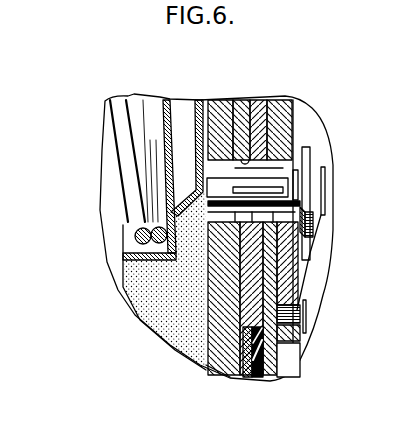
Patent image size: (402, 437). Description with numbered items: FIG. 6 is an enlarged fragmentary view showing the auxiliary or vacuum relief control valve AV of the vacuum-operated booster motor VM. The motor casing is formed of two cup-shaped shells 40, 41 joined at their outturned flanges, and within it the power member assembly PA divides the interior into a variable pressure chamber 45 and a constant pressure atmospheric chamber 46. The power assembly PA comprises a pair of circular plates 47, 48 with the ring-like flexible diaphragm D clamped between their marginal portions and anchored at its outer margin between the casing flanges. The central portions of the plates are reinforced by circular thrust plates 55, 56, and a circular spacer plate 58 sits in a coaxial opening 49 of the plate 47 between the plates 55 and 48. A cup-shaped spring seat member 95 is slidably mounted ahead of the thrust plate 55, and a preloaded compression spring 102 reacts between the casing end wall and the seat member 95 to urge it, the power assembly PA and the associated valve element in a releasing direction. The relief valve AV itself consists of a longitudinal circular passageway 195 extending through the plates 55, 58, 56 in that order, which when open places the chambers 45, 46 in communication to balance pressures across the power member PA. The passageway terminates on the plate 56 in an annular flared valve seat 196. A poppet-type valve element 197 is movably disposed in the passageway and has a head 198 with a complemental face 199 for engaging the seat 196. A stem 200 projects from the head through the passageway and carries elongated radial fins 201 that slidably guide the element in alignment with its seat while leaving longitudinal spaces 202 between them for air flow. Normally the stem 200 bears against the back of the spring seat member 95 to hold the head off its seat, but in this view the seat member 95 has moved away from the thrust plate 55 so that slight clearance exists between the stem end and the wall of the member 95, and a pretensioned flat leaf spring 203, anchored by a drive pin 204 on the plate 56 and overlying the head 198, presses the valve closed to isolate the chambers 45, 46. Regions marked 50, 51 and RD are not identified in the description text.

The cup-shaped shell 40 is at (140, 321).
The variable pressure (vacuum) chamber 45 is at (110, 233).
The coaxial opening 49 is at (210, 318).
The compression spring 102 is at (118, 112).
The spring seat member 95 is at (133, 264).
The thrust plate 55 is at (212, 112).
The longitudinal circular passageway 195 is at (241, 157).
The thrust plate 56 is at (275, 112).
The poppet-type valve element 197 is at (293, 173).
The complemental face 199 is at (287, 184).
The longitudinal spaces 202 is at (300, 202).
The head 198 is at (310, 218).
The valve seat 196 is at (310, 254).
The cup-shaped shell 41 is at (325, 128).
The flat leaf spring 203 is at (311, 281).
The constant pressure (atmospheric) chamber 46 is at (313, 310).
The spacer plate 58 is at (208, 306).
The fins 201 is at (250, 262).
The stem 200 is at (240, 228).
The drive pin 204 is at (285, 325).
The flexible diaphragm D is at (256, 382).
The circular plate 47 is at (245, 378).
The circular plate 48 is at (268, 380).
The edge 51 is at (222, 367).
The bottom edge 50 is at (200, 365).
The power member assembly PA is at (297, 379).
The auxiliary or vacuum relief control valve AV is at (334, 174).
The vacuum-operated motor VM is at (91, 163).
The element RD is at (112, 183).